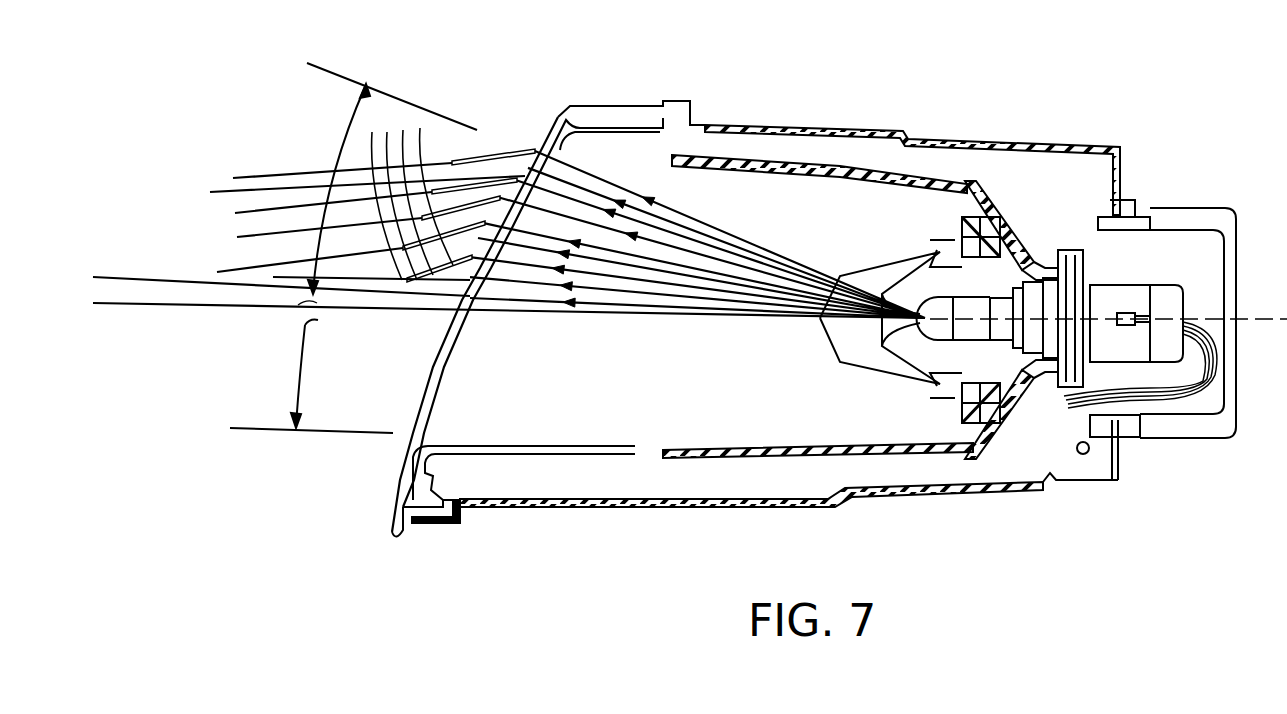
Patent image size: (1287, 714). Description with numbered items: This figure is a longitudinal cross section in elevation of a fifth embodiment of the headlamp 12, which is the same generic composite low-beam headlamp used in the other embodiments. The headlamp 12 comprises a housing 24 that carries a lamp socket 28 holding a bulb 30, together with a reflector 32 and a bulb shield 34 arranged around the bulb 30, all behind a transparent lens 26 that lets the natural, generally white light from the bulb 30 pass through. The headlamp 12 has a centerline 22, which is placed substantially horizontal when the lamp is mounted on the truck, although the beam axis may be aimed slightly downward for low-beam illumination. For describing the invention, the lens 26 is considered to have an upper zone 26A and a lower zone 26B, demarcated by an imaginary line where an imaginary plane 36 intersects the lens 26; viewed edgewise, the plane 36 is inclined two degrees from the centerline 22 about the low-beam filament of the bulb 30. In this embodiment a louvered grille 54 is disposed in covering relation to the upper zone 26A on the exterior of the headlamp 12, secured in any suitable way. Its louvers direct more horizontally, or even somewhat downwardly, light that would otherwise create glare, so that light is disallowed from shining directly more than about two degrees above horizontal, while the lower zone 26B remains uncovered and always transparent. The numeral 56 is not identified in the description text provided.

The headlamp 12 is at (708, 125).
The centerline 22 is at (522, 316).
The housing 24 is at (758, 508).
The lens 26 is at (443, 372).
The upper zone 26A is at (343, 137).
The lower zone 26B is at (296, 400).
The lamp socket 28 is at (1163, 285).
The bulb 30 is at (978, 297).
The reflector 32 is at (758, 455).
The bulb shield 34 is at (866, 364).
The imaginary plane 36 is at (137, 277).
The louvered grille 54 is at (537, 150).
The curved prism surfaces 56 is at (455, 190).